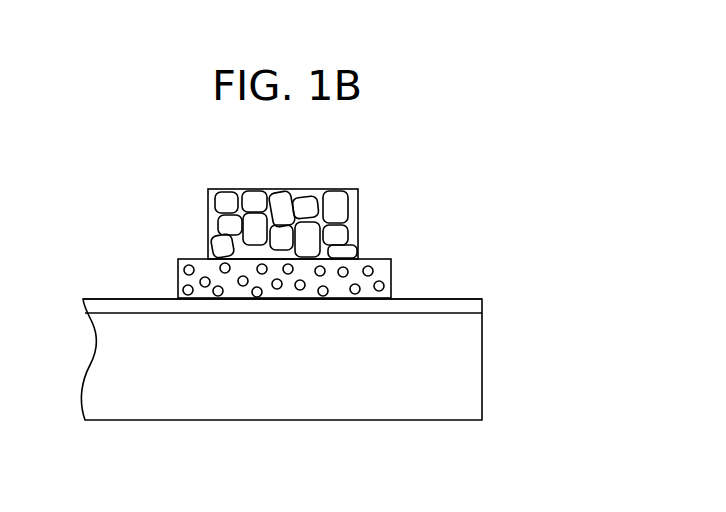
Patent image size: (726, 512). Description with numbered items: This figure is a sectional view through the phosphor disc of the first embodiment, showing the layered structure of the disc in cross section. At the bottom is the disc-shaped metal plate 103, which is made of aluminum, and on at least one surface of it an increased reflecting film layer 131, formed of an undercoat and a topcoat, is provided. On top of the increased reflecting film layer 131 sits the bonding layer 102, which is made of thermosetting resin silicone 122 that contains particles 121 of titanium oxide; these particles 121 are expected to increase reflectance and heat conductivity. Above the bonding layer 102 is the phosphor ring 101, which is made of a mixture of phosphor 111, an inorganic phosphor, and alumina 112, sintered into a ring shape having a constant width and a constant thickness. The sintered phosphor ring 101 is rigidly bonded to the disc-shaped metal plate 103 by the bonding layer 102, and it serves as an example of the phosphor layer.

The phosphor ring 101 is at (358, 223).
The phosphor 111 is at (220, 202).
The alumina 112 is at (215, 227).
The bonding layer 102 is at (391, 278).
The particles 121 is at (177, 267).
The thermosetting resin silicone 122 is at (178, 283).
The increased reflecting film layer 131 is at (445, 308).
The disc-shaped metal plate 103 is at (457, 378).